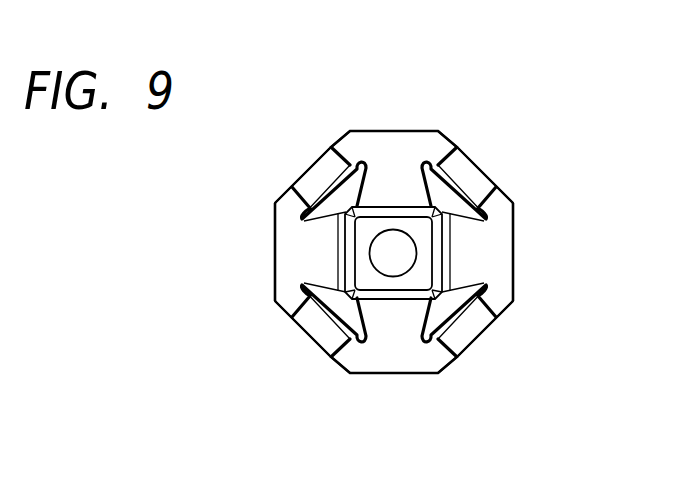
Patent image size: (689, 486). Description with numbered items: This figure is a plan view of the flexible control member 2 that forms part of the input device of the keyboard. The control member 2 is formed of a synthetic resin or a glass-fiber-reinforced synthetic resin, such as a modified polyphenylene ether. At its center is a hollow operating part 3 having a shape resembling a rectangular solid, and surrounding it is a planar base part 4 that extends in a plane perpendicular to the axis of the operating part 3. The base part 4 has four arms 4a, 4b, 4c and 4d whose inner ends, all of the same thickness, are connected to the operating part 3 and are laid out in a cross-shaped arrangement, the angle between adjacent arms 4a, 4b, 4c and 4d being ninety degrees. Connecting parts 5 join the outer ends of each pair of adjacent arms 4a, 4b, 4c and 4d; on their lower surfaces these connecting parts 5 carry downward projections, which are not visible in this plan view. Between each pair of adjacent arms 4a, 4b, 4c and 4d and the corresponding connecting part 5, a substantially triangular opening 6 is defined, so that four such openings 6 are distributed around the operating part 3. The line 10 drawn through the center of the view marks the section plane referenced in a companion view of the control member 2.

The control member 2 is at (504, 158).
The operating part 3 is at (427, 240).
The base part 4 is at (513, 299).
The arm 4a is at (387, 322).
The arm 4b is at (410, 172).
The arm 4c is at (477, 263).
The arm 4d is at (317, 250).
The connecting part 5 is at (324, 178).
The opening 6 is at (328, 200).
The center line 10 is at (395, 107).